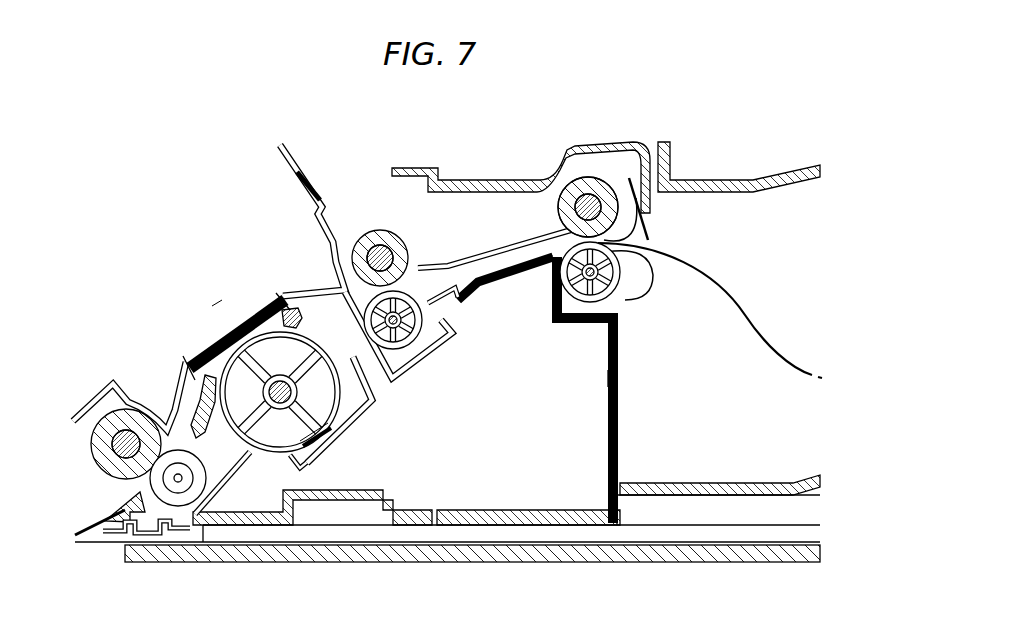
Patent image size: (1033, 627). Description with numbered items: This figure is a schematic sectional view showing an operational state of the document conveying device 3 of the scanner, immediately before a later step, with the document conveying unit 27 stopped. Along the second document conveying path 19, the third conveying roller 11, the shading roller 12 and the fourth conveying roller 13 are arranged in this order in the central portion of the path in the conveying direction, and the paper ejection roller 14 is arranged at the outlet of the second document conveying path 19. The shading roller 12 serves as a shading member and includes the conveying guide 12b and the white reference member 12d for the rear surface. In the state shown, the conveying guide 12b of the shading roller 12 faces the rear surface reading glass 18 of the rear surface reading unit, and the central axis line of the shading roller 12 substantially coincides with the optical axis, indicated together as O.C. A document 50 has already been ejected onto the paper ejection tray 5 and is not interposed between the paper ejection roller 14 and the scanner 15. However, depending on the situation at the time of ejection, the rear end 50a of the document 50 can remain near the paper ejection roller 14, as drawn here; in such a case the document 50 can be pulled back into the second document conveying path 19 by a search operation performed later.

The document conveying device 3 is at (155, 281).
The paper ejection tray 5 is at (768, 483).
The third conveying roller 11 is at (128, 405).
The shading roller 12 is at (262, 450).
The conveying guide 12b is at (298, 338).
The white reference member 12d is at (322, 450).
The fourth conveying roller 13 is at (376, 232).
The paper ejection roller 14 is at (590, 200).
The scanner 15 is at (628, 276).
The rear surface reading glass 18 is at (241, 332).
The second document conveying path 19 is at (457, 266).
The document conveying unit 27 is at (330, 138).
The document 50 is at (741, 310).
The rear end 50a is at (612, 228).
The optical axis and central axis line O.C is at (213, 313).